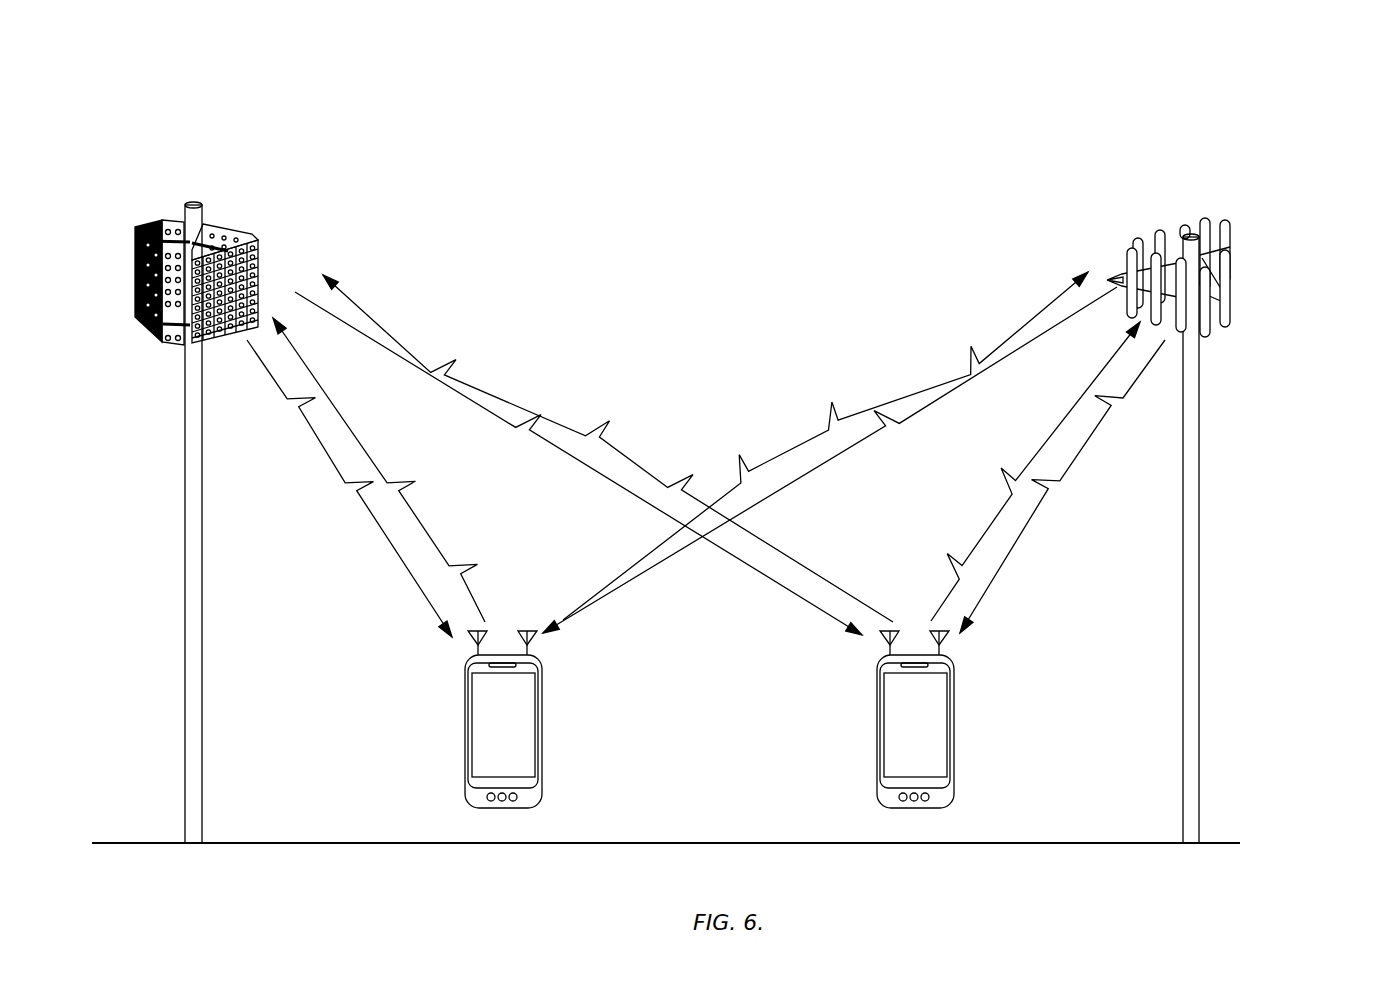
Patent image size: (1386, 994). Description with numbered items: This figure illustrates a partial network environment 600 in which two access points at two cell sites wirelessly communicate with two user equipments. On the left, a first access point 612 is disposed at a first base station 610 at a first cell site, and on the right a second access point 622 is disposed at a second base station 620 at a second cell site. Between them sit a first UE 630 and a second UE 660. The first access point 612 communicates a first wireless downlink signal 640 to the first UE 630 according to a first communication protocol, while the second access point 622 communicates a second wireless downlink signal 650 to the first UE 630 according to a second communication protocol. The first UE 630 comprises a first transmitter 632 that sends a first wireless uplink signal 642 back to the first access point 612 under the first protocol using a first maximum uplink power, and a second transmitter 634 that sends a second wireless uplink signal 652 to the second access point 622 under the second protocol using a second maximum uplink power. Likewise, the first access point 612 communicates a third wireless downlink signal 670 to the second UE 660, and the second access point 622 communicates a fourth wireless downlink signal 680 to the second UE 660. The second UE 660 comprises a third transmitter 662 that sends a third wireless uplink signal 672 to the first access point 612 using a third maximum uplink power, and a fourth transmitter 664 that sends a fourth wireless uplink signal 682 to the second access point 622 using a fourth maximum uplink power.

The network environment 600 is at (330, 58).
The first base station 610 is at (133, 495).
The first access point 612 is at (193, 203).
The second base station 620 is at (1262, 437).
The second access point 622 is at (1208, 216).
The first UE 630 is at (465, 737).
The first transmitter 632 is at (475, 650).
The second transmitter 634 is at (530, 650).
The first wireless downlink signal 640 is at (403, 572).
The first wireless uplink signal 642 is at (350, 426).
The second wireless downlink signal 650 is at (628, 591).
The second wireless uplink signal 652 is at (619, 553).
The second UE 660 is at (877, 737).
The third transmitter 662 is at (887, 650).
The fourth transmitter 664 is at (942, 650).
The third wireless downlink signal 670 is at (781, 590).
The third wireless uplink signal 672 is at (782, 554).
The fourth wireless downlink signal 680 is at (1019, 566).
The fourth wireless uplink signal 682 is at (993, 526).